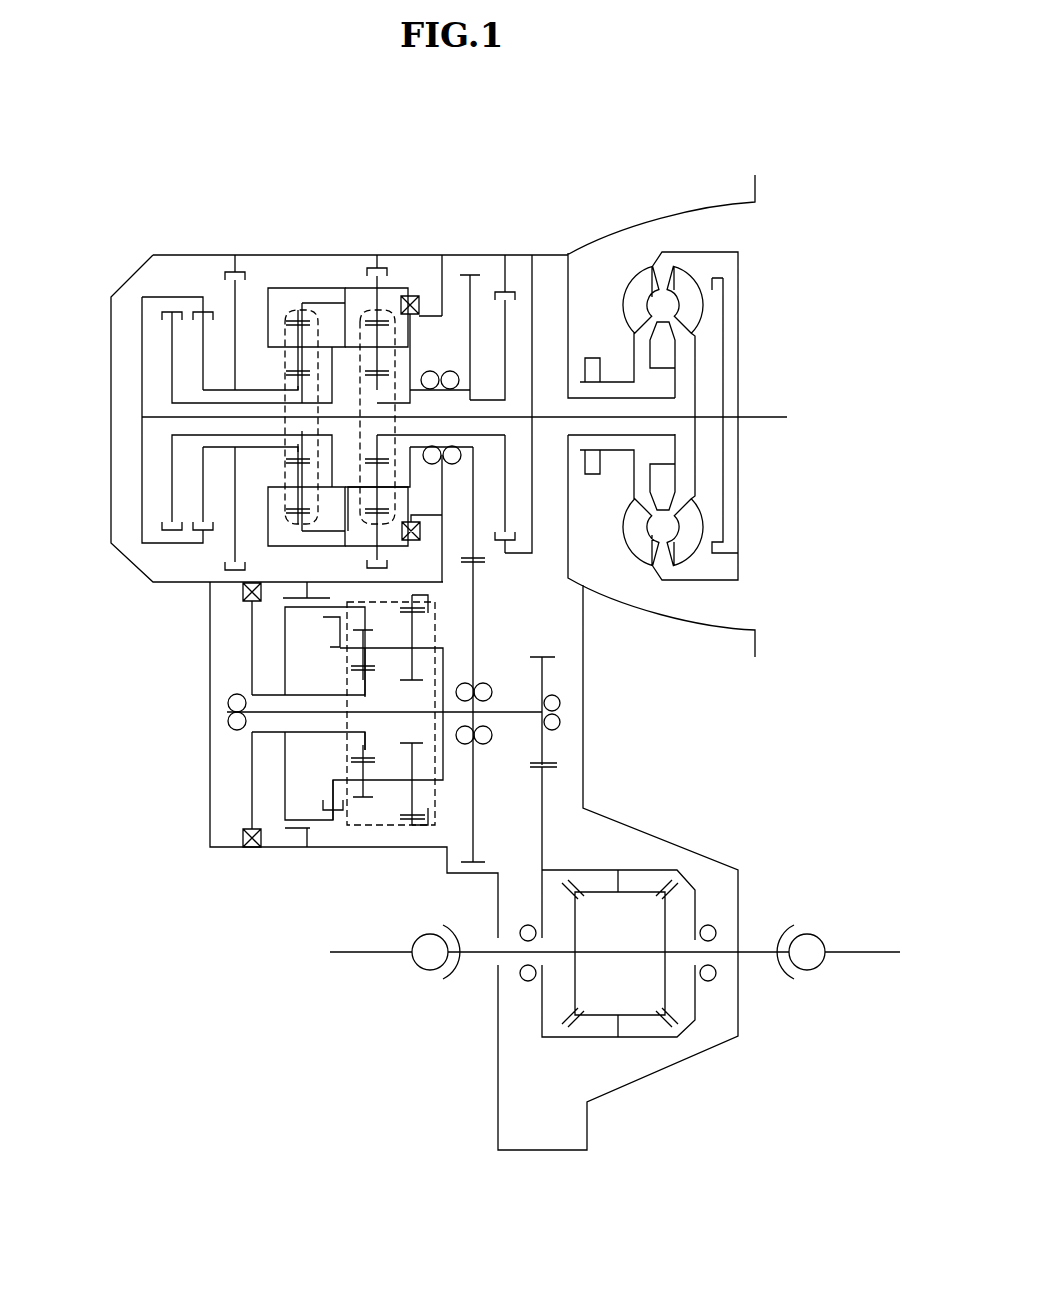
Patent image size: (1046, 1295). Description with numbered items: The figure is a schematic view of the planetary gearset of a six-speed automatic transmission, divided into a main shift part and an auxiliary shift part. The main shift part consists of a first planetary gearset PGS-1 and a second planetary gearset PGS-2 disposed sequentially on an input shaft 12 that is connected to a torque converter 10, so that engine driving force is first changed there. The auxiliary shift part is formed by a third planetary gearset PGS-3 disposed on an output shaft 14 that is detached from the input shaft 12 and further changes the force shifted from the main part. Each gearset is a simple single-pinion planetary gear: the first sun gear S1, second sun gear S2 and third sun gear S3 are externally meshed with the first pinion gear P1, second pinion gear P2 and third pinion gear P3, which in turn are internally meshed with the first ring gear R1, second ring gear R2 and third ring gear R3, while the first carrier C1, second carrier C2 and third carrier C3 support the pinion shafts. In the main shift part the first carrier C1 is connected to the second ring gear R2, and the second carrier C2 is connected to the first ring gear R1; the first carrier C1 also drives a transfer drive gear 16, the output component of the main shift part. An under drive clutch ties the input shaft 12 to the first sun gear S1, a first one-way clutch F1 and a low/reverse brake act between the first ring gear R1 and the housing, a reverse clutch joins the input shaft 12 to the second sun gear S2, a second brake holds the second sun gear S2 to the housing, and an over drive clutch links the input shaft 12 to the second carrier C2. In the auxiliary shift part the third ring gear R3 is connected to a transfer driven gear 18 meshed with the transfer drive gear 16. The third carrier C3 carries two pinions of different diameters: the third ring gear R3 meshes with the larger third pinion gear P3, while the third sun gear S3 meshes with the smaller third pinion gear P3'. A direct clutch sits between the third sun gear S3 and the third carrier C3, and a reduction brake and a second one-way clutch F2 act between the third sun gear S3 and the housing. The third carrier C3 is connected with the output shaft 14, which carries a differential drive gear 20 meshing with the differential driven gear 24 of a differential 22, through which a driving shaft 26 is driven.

The torque converter 10 is at (697, 270).
The input shaft 12 is at (670, 416).
The output shaft 14 is at (498, 712).
The transfer drive gear 16 is at (471, 327).
The transfer driven gear 18 is at (478, 604).
The differential drive gear 20 is at (545, 752).
The differential 22 is at (644, 858).
The differential driven gear 24 is at (545, 800).
The driving shaft 26 is at (866, 952).
The first one-way clutch F1 is at (423, 290).
The second one-way clutch F2 is at (238, 838).
The first planetary gearset PGS-1 is at (362, 310).
The second planetary gearset PGS-2 is at (285, 300).
The third planetary gearset PGS-3 is at (395, 837).
The first ring gear R1 is at (364, 300).
The first pinion gear P1 is at (382, 360).
The first sun gear S1 is at (376, 386).
The first carrier C1 is at (402, 346).
The second ring gear R2 is at (314, 306).
The second pinion gear P2 is at (293, 344).
The second sun gear S2 is at (296, 398).
The second carrier C2 is at (288, 324).
The third ring gear R3 is at (410, 600).
The third pinion gear P3 is at (379, 700).
The third pinion gear P3' is at (326, 713).
The third sun gear S3 is at (367, 758).
The third carrier C3 is at (397, 650).